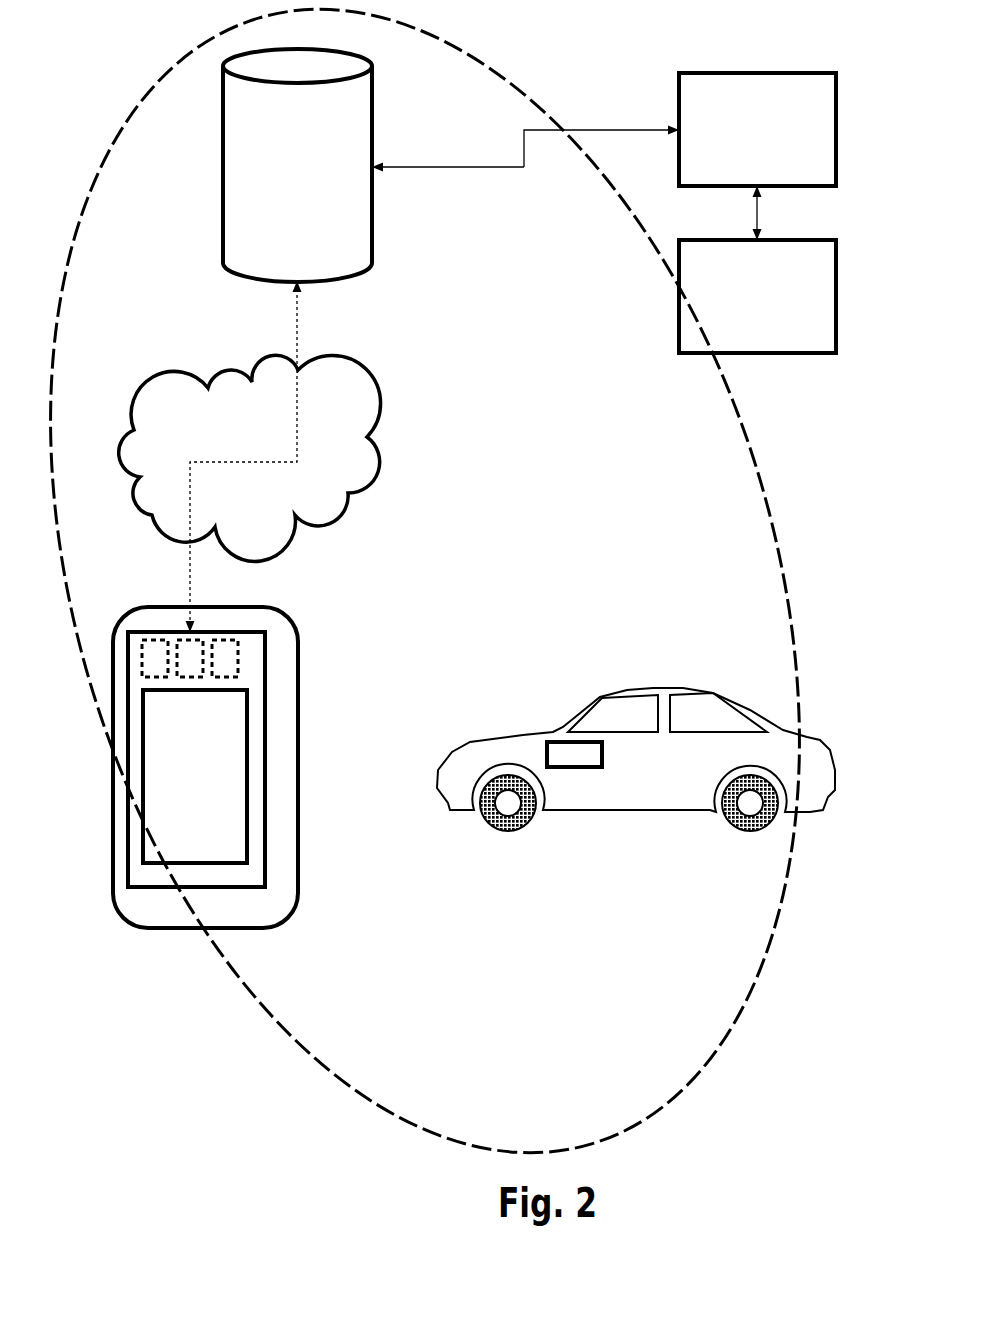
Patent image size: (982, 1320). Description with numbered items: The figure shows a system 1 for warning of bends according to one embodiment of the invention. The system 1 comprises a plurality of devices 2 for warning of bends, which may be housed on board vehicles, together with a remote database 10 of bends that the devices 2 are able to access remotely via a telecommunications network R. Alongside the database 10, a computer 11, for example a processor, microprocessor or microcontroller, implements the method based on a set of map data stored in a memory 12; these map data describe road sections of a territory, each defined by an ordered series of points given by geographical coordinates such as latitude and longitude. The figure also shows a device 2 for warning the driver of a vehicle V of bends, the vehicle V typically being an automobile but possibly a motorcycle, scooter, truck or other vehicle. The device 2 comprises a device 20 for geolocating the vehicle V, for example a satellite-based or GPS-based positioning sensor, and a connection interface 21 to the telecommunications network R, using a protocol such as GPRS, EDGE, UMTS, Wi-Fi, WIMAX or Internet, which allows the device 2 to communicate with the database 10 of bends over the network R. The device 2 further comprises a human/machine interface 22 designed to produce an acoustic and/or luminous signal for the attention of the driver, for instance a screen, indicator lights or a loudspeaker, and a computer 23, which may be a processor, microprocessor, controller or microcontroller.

The system for warning of bends 1 is at (790, 900).
The remote database of bends 10 is at (297, 165).
The computer 11 is at (757, 129).
The memory 12 is at (757, 296).
The telecommunications network R is at (390, 486).
The device for warning of bends 2 is at (357, 843).
The device for geolocating the vehicle 20 is at (160, 678).
The connection interface 21 is at (195, 677).
The human/machine interface 22 is at (195, 776).
The computer 23 is at (240, 660).
The vehicle V is at (666, 806).